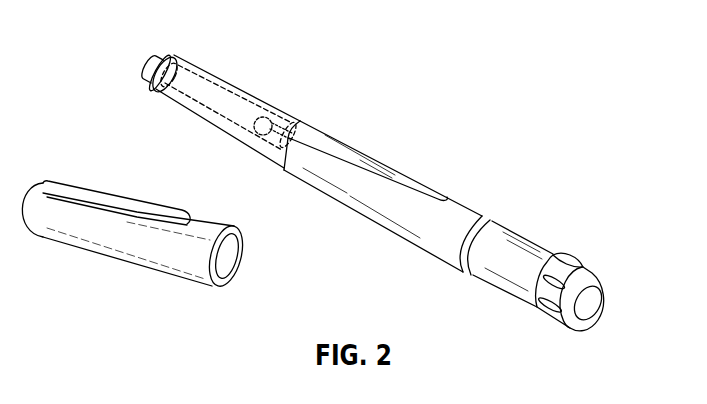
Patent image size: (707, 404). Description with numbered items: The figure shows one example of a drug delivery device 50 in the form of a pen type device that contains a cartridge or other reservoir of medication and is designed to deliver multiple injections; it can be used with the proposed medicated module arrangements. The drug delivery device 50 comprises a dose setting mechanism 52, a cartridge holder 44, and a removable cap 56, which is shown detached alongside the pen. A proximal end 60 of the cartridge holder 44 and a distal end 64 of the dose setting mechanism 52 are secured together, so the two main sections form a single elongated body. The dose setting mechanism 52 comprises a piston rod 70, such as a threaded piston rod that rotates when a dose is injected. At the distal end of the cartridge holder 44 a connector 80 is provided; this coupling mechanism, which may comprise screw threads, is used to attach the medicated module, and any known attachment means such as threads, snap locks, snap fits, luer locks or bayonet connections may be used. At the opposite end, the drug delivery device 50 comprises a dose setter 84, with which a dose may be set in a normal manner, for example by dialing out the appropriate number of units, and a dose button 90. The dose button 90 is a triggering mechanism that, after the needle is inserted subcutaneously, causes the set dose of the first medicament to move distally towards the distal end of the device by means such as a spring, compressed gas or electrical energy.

The drug delivery device 50 is at (465, 83).
The cartridge holder 44 is at (238, 86).
The connector 80 is at (158, 55).
The proximal end 60 is at (267, 156).
The piston rod 70 is at (292, 116).
The dose setting mechanism 52 is at (420, 178).
The distal end 64 is at (345, 136).
The dose setter 84 is at (578, 260).
The dose button 90 is at (604, 302).
The removable cap 56 is at (133, 263).